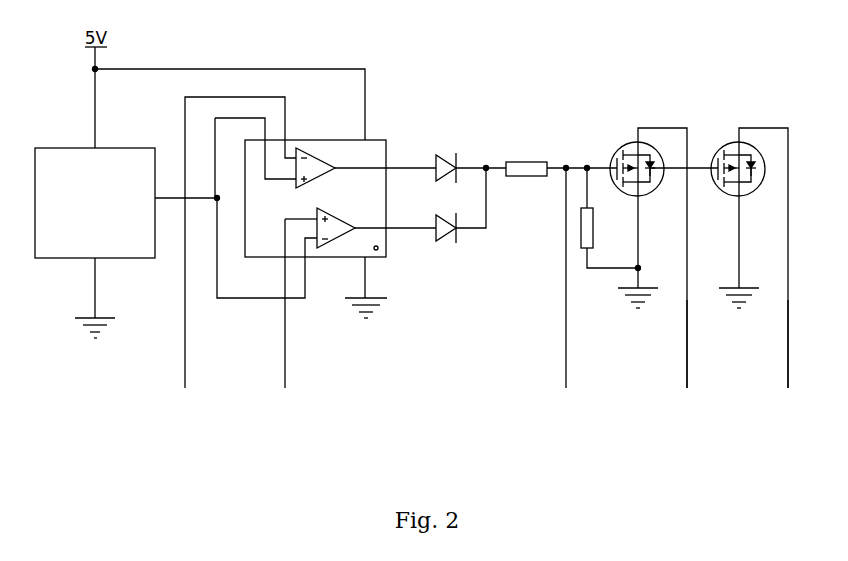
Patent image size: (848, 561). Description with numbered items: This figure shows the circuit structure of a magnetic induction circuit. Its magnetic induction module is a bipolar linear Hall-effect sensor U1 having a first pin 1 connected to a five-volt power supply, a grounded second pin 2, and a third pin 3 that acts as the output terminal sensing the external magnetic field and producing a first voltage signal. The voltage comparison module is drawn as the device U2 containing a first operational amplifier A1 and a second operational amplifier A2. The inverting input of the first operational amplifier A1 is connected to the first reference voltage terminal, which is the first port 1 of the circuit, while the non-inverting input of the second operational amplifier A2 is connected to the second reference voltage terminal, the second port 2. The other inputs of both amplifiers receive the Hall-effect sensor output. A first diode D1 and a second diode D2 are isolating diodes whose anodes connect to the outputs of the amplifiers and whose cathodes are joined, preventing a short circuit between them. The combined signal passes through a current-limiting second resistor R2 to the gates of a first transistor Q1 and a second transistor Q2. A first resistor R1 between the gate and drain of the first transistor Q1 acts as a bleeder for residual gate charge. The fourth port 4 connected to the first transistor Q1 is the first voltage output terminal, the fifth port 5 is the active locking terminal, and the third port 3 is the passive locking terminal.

The bipolar linear Hall-effect sensor U1 is at (127, 232).
The dual comparator U2 is at (340, 218).
The first operational amplifier A1 is at (366, 165).
The second operational amplifier A2 is at (376, 224).
The first diode D1 is at (471, 156).
The second diode D2 is at (462, 205).
The first resistor R1 is at (611, 218).
The second resistor R2 is at (561, 160).
The first transistor Q1 is at (645, 254).
The second transistor Q2 is at (746, 254).
The first port 1 is at (235, 268).
The second port 2 is at (266, 279).
The third port 3 is at (566, 303).
The fourth port 4 is at (687, 370).
The fifth port 5 is at (788, 370).